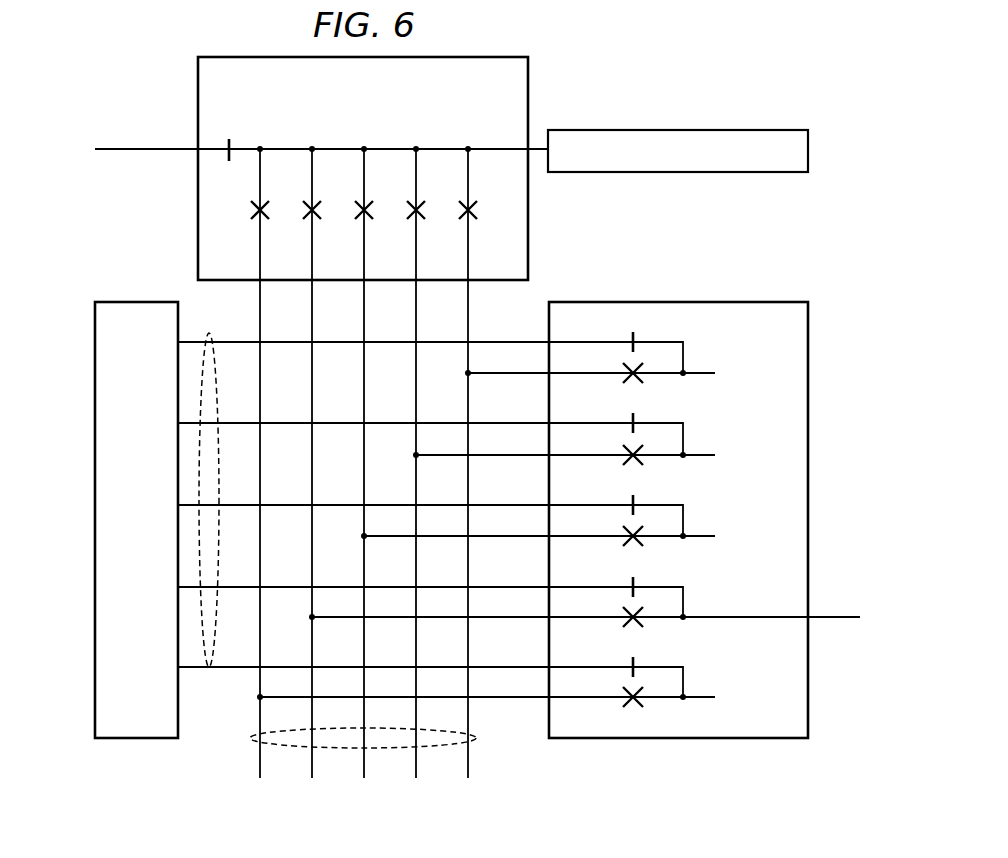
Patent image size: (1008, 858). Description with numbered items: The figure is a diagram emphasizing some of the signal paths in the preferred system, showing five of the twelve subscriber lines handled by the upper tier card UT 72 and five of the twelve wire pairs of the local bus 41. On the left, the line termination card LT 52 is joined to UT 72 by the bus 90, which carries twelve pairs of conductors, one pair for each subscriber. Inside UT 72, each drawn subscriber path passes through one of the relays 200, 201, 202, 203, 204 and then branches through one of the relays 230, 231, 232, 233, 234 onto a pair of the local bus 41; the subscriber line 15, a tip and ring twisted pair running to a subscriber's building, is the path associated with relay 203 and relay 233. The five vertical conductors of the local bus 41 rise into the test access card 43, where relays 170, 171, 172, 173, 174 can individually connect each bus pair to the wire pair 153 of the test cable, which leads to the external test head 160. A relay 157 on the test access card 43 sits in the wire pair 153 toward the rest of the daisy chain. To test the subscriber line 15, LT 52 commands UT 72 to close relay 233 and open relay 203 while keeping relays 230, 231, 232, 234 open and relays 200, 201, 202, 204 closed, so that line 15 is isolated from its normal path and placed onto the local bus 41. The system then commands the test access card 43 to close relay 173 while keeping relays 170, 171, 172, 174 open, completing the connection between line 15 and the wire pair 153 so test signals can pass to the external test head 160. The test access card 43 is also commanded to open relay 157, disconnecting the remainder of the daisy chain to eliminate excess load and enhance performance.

The subscriber line 15 is at (836, 621).
The local bus 41 is at (476, 738).
The test access card 43 is at (196, 195).
The LT (line termination card) 52 is at (122, 560).
The UT (upper tier card) 72 is at (749, 558).
The bus 90 is at (208, 667).
The wire pair 153 is at (140, 148).
The relay 157 is at (231, 143).
The external test head 160 is at (678, 130).
The relay 170 is at (472, 218).
The relay 171 is at (420, 218).
The relay 172 is at (360, 218).
The relay 173 is at (308, 218).
The relay 174 is at (256, 218).
The relay 200 is at (631, 334).
The relay 201 is at (631, 415).
The relay 202 is at (631, 497).
The relay 203 is at (631, 579).
The relay 204 is at (631, 659).
The relay 230 is at (641, 379).
The relay 231 is at (641, 461).
The relay 232 is at (641, 542).
The relay 233 is at (641, 623).
The relay 234 is at (641, 703).